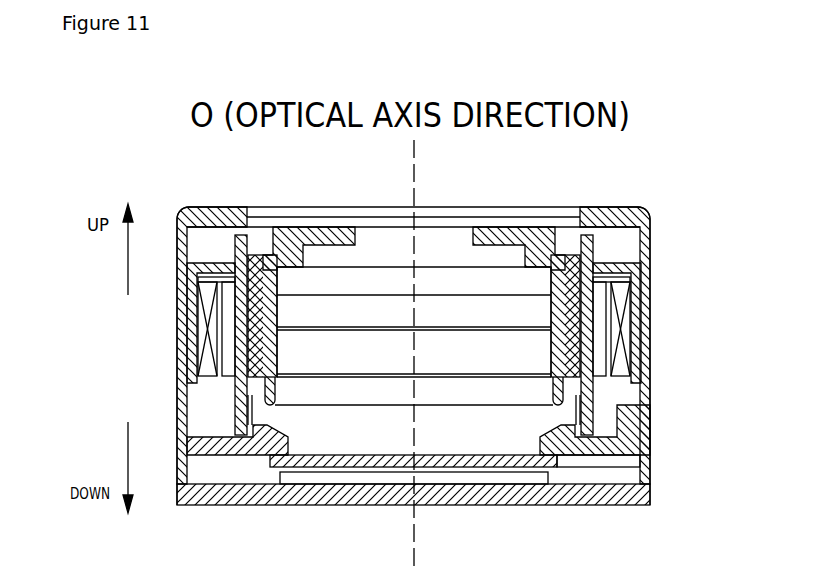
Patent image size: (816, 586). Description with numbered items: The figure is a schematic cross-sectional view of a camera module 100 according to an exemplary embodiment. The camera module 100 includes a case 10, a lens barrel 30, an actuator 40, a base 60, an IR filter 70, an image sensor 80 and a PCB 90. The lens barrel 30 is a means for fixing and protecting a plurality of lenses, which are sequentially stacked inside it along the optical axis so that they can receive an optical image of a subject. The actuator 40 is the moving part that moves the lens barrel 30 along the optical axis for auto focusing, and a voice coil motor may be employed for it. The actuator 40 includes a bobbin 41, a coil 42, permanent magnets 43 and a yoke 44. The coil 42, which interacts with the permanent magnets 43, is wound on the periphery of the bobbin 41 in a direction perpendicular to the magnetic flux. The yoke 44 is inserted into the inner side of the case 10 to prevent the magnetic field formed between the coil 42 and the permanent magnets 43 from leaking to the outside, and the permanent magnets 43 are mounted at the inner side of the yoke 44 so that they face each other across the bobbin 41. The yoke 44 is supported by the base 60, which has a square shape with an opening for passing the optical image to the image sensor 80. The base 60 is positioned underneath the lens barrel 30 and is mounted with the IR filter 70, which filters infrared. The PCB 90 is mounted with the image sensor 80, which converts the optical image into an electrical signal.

The camera module 100 is at (664, 168).
The case 10 is at (608, 206).
The lens barrel 30 is at (327, 216).
The actuator 40 is at (716, 267).
The bobbin 41 is at (594, 306).
The coil 42 is at (598, 357).
The permanent magnet 43 is at (616, 337).
The yoke 44 is at (632, 270).
The base 60 is at (187, 458).
The IR filter 70 is at (486, 462).
The image sensor 80 is at (368, 478).
The PCB 90 is at (326, 497).